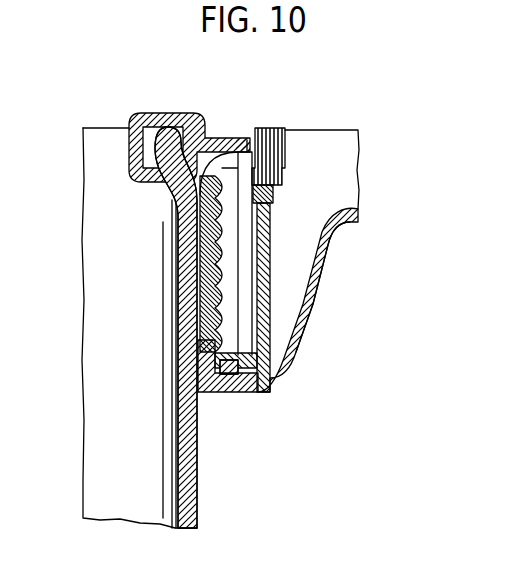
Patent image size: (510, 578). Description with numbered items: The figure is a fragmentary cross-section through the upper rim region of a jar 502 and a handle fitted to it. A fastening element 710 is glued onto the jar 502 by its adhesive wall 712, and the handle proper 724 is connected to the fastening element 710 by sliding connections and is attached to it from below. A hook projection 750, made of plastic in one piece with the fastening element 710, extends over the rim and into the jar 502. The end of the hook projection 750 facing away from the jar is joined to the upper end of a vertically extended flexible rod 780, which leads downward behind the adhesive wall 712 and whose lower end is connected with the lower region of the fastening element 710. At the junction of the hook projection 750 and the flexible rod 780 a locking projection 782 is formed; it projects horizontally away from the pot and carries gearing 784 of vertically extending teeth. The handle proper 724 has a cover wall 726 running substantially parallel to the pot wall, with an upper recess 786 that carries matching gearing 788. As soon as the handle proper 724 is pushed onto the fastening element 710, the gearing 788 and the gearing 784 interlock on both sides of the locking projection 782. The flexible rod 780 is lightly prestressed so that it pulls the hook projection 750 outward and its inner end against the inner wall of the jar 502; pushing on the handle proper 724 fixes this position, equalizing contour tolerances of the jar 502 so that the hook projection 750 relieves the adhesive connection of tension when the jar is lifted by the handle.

The jar 502 is at (198, 481).
The fastening element 710 is at (210, 392).
The adhesive wall 712 is at (199, 236).
The handle proper 724 is at (316, 304).
The cover wall 726 is at (262, 268).
The hook projection 750 is at (162, 113).
The flexible rod 780 is at (243, 232).
The locking projection 782 is at (286, 152).
The gearing 784 is at (252, 146).
The upper recess 786 is at (276, 184).
The gearing 788 is at (272, 128).